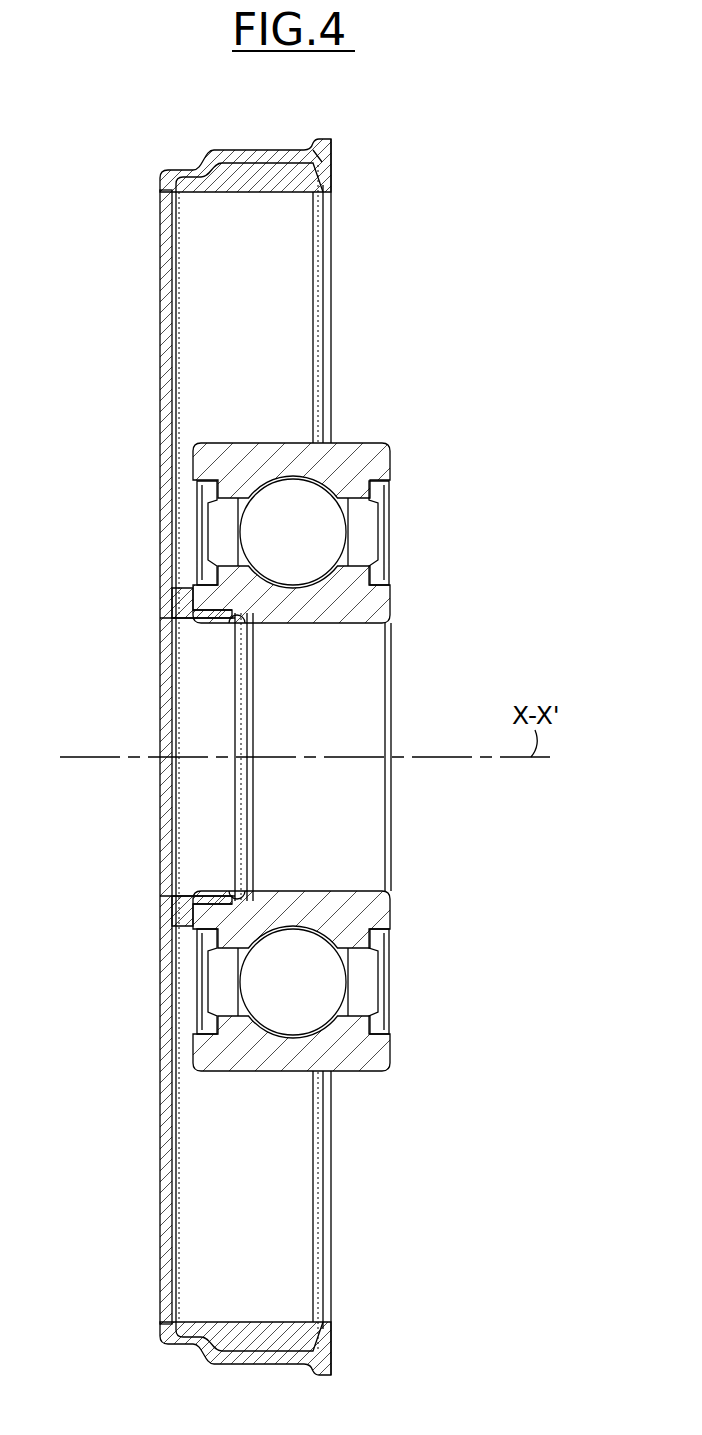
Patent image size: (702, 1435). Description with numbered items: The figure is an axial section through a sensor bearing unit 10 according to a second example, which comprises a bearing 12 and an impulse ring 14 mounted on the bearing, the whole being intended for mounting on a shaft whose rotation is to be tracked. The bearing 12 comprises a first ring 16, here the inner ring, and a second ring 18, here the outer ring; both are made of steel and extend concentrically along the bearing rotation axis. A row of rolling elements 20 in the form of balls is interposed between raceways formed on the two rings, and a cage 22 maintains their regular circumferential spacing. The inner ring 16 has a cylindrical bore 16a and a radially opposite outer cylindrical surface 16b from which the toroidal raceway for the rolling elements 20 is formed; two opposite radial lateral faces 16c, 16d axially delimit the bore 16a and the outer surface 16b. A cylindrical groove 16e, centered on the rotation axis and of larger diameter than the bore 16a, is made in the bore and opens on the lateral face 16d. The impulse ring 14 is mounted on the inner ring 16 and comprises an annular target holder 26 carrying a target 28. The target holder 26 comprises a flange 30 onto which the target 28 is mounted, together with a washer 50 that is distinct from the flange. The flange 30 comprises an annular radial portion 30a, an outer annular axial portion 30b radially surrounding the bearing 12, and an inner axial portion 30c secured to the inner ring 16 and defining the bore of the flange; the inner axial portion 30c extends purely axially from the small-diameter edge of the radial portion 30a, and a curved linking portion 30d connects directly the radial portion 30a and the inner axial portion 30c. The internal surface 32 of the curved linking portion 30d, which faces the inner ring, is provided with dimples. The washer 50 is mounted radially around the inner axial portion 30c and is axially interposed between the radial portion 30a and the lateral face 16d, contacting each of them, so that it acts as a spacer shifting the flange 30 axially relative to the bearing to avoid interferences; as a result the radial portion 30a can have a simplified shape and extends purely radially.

The sensor bearing unit 10 is at (480, 290).
The bearing 12 is at (335, 516).
The impulse ring 14 is at (150, 268).
The first ring 16 is at (272, 766).
The bore 16a is at (325, 623).
The outer cylindrical surface 16b is at (379, 553).
The radial lateral face 16c is at (392, 608).
The radial lateral face 16d is at (165, 933).
The cylindrical groove 16e is at (217, 903).
The second ring 18 is at (324, 981).
The rolling elements 20 is at (306, 996).
The cage 22 is at (355, 1002).
The target holder 26 is at (150, 1182).
The target 28 is at (316, 180).
The flange 30 is at (150, 1051).
The annular radial portion 30a is at (170, 520).
The outer annular axial portion 30b is at (263, 158).
The inner axial portion 30c is at (217, 617).
The curved linking portion 30d is at (172, 617).
The internal surface 32 is at (197, 600).
The washer 50 is at (178, 913).